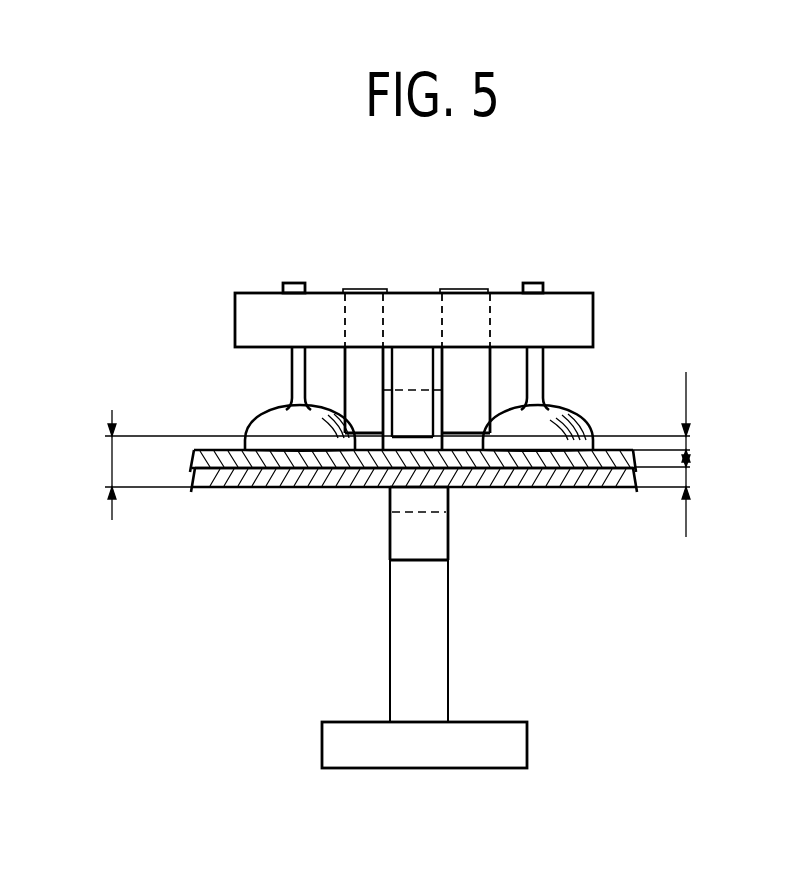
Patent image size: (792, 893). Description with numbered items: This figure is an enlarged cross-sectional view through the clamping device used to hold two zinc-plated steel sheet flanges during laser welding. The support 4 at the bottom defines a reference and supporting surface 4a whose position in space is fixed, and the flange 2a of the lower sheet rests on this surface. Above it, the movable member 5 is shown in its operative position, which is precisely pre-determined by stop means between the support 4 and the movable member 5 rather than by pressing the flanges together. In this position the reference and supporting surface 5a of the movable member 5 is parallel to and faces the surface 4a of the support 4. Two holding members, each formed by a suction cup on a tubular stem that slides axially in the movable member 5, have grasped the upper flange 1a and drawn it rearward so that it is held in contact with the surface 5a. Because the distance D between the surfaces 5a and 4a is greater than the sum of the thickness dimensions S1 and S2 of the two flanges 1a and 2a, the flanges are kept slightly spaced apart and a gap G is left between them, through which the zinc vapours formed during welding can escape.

The movable member 5 is at (596, 310).
The reference and supporting surface 5a is at (410, 441).
The flange 1a is at (198, 462).
The flange 2a is at (256, 488).
The support 4 is at (458, 670).
The reference and supporting surface 4a is at (427, 474).
The distance D is at (139, 465).
The gap G is at (690, 440).
The thickness dimension S1 is at (690, 475).
The thickness dimension S2 is at (690, 455).